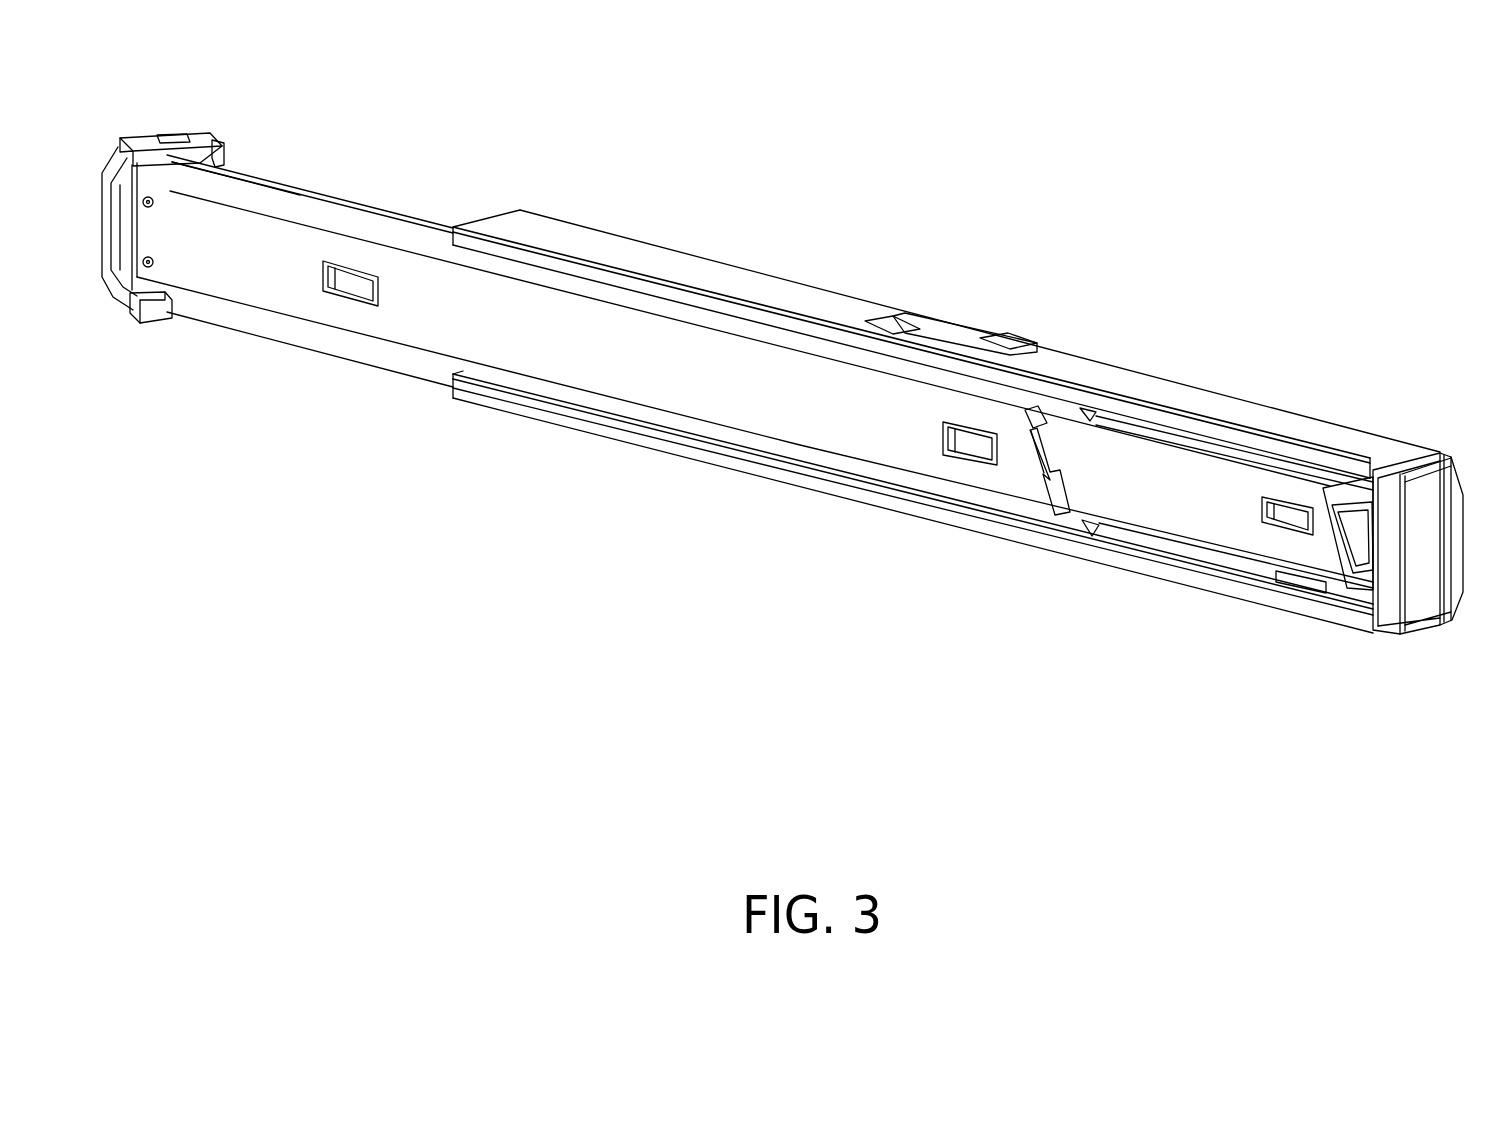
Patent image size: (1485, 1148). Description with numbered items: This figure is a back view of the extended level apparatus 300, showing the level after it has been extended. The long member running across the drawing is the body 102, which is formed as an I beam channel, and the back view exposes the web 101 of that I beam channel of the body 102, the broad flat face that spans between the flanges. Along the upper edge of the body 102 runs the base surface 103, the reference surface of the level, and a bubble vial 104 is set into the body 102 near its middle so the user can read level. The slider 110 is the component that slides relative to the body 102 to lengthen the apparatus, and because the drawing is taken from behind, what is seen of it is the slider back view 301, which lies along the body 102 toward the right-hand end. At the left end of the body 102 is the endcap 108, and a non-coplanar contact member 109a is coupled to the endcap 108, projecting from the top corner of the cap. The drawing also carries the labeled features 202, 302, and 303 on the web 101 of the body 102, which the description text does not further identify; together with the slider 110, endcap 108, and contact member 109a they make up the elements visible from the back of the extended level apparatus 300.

The extended level apparatus 300 is at (1110, 186).
The endcap 108 is at (106, 150).
The non-coplanar contact member 109a is at (163, 132).
The slider 110 is at (265, 177).
The base surface 103 is at (557, 233).
The bubble vial 104 is at (942, 333).
The body 102 is at (633, 443).
The web 101 is at (1195, 480).
The slider back view 301 is at (775, 410).
The window 202 is at (358, 285).
The window 302 is at (977, 447).
The window 303 is at (1287, 517).